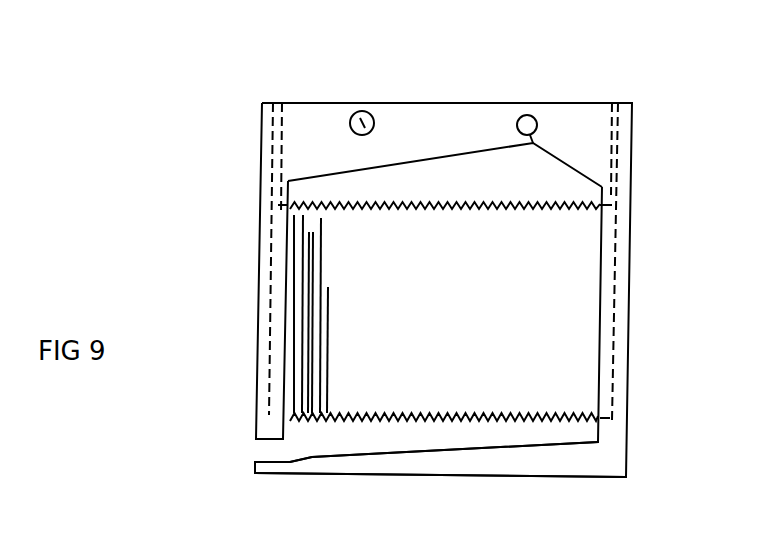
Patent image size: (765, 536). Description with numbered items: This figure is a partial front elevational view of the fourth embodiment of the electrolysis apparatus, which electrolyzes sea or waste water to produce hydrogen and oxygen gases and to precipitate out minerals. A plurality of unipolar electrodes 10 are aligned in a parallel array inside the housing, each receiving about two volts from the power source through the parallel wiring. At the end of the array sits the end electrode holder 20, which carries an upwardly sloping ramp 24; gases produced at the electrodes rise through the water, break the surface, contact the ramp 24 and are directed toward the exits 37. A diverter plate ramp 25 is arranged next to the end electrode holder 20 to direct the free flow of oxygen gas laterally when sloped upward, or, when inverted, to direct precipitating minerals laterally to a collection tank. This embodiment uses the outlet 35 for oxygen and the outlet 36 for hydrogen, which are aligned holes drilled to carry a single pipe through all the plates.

The unipolar electrodes 10 is at (302, 285).
The end electrode holder 20 is at (623, 438).
The upwardly sloping ramp 24 is at (432, 158).
The ramp 25 is at (306, 460).
The outlet 35 is at (532, 118).
The outlet 36 is at (362, 112).
The exits 37 is at (520, 140).